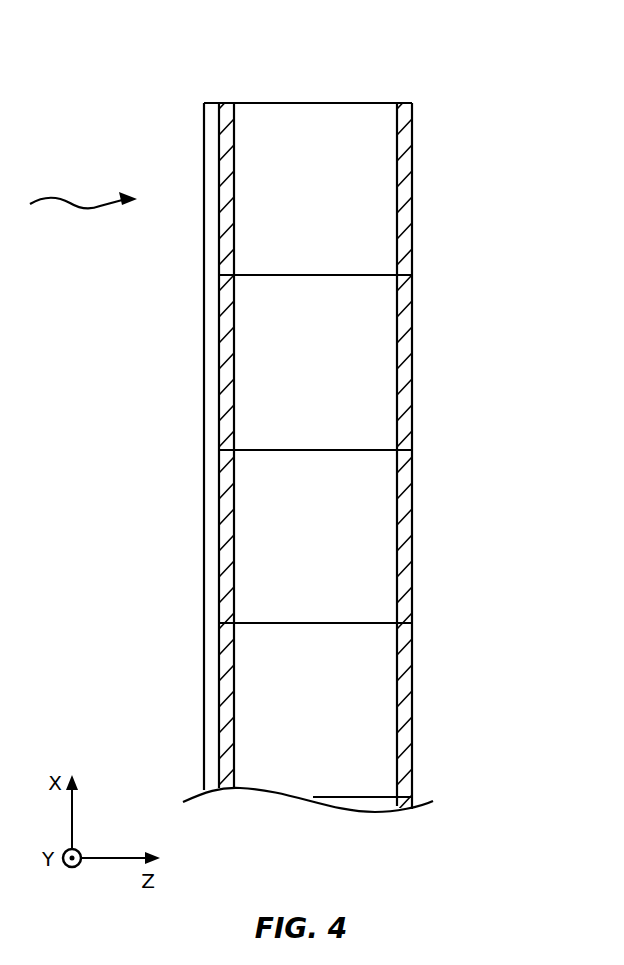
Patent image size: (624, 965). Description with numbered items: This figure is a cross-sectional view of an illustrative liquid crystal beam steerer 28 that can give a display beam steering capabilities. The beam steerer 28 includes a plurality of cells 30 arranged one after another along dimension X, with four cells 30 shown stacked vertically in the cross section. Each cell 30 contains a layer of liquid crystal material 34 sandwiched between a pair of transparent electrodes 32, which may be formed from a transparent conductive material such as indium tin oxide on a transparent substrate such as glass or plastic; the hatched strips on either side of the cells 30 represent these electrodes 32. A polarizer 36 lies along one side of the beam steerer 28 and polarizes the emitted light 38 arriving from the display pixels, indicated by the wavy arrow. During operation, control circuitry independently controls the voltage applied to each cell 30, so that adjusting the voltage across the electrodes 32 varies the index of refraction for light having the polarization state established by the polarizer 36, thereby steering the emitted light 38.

The beam steerer 28 is at (427, 53).
The cells 30 is at (497, 103).
The transparent electrodes 32 is at (226, 158).
The liquid crystal material 34 is at (375, 190).
The polarizer 36 is at (210, 396).
The emitted light 38 is at (90, 211).